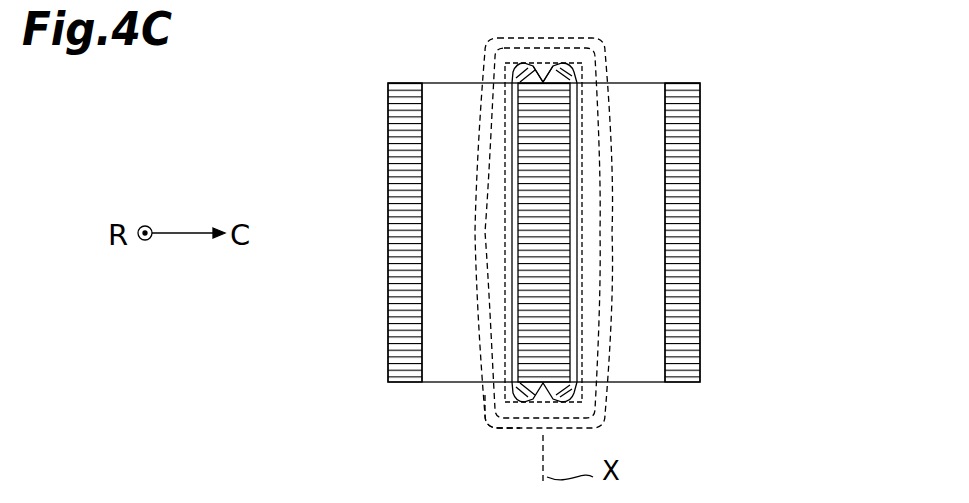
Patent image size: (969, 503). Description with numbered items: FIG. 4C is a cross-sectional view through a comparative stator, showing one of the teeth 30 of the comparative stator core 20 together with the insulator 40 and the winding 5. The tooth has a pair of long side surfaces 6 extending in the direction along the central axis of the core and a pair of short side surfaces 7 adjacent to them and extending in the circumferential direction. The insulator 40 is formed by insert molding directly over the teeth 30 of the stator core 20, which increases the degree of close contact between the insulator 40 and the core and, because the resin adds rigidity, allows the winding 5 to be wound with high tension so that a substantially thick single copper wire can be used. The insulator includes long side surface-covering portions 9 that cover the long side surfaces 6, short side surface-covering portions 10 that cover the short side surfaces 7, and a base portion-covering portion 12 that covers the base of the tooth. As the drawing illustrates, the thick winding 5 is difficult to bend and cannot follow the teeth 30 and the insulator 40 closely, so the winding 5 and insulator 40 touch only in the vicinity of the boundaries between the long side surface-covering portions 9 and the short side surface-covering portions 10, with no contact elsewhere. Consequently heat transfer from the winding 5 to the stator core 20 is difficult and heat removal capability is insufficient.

The winding 5 is at (482, 408).
The long side surfaces 6 is at (510, 203).
The short side surfaces 7 is at (543, 72).
The long side surface-covering portions 9 is at (507, 268).
The short side surface-covering portions 10 is at (520, 67).
The base portion-covering portion 12 is at (438, 363).
The comparative stator core 20 is at (388, 383).
The teeth 30 is at (512, 150).
The insulator 40 is at (528, 72).